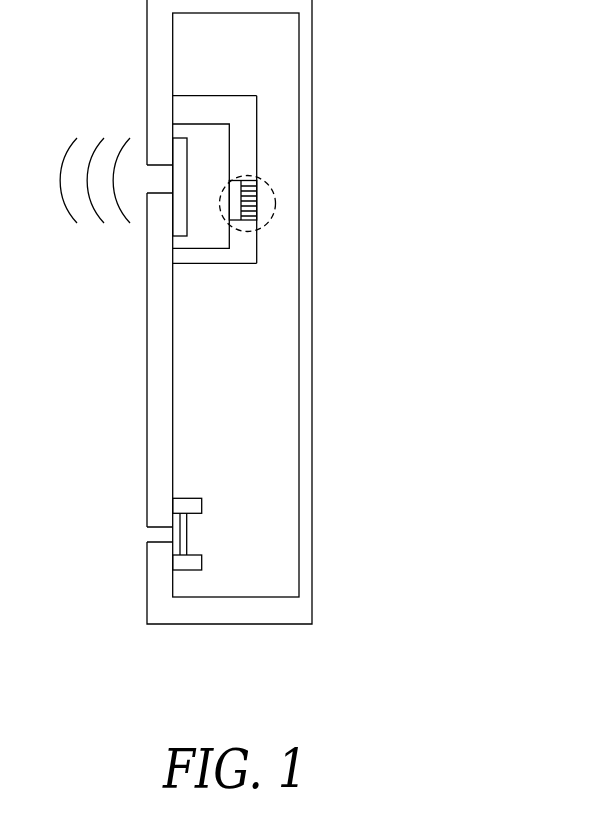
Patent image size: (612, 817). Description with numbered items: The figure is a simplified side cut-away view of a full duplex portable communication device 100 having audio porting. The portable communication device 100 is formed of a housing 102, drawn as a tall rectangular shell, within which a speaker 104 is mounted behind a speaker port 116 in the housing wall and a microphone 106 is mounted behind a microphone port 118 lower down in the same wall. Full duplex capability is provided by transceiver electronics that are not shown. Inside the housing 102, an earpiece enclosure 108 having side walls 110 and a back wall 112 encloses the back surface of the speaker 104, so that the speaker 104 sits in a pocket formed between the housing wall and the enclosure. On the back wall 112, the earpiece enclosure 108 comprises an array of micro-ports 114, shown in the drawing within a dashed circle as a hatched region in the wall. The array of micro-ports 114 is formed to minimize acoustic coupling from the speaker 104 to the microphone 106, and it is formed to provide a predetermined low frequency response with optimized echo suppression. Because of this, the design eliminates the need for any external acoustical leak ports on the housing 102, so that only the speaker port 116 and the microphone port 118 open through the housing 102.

The portable communication device 100 is at (502, 686).
The housing 102 is at (228, 626).
The speaker 104 is at (180, 152).
The microphone 106 is at (180, 522).
The earpiece enclosure 108 is at (258, 294).
The side walls 110 is at (213, 95).
The back wall 112 is at (257, 120).
The array of micro-ports 114 is at (276, 203).
The speaker port 116 is at (160, 180).
The microphone port 118 is at (155, 533).